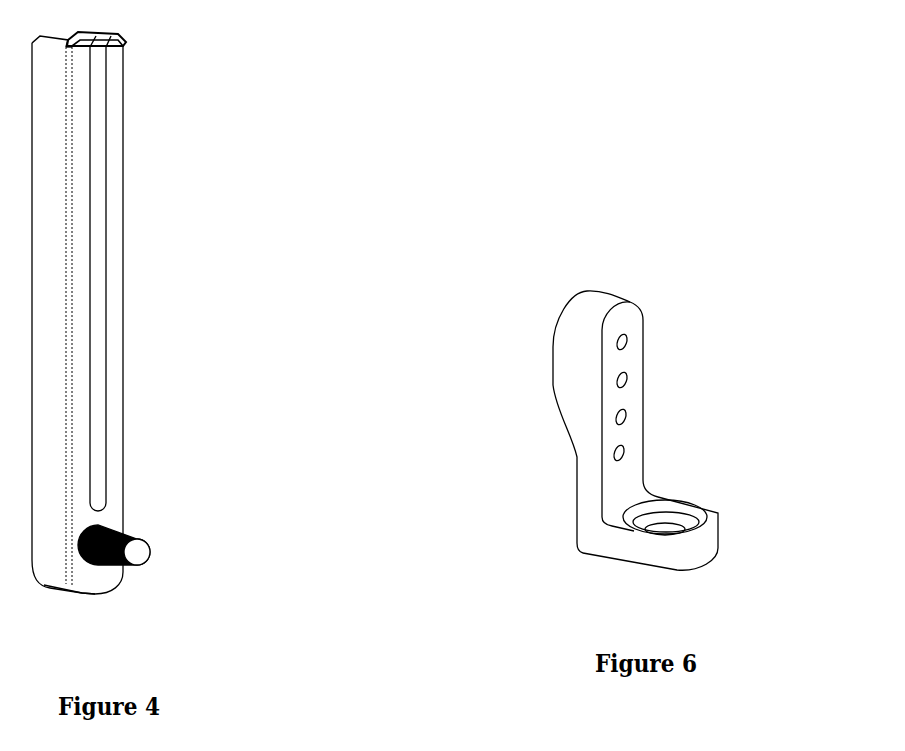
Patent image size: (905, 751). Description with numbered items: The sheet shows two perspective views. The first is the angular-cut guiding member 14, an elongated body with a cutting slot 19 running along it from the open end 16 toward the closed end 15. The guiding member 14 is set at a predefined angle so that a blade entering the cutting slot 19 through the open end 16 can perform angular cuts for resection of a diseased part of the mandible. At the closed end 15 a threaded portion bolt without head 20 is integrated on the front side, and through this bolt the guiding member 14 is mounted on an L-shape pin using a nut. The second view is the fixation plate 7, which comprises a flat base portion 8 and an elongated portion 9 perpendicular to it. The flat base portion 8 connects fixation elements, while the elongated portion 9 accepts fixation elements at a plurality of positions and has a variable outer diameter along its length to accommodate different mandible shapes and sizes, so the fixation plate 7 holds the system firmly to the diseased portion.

In FIG. 4, the angular-cut guiding member 14 is at (120, 270).
In FIG. 4, the closed end 15 is at (110, 590).
In FIG. 4, the open end 16 is at (127, 47).
In FIG. 4, the cutting slot 19 is at (98, 362).
In FIG. 4, the threaded portion bolt without head 20 is at (150, 545).
In FIG. 6, the fixation plate 7 is at (645, 388).
In FIG. 6, the flat base portion 8 is at (702, 545).
In FIG. 6, the elongated portion 9 is at (553, 347).